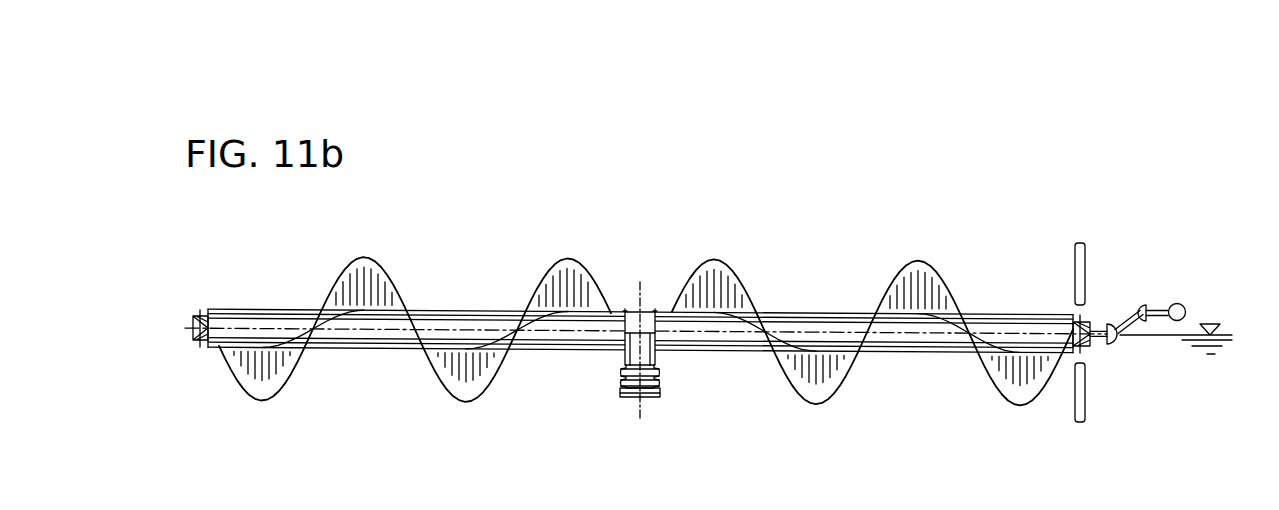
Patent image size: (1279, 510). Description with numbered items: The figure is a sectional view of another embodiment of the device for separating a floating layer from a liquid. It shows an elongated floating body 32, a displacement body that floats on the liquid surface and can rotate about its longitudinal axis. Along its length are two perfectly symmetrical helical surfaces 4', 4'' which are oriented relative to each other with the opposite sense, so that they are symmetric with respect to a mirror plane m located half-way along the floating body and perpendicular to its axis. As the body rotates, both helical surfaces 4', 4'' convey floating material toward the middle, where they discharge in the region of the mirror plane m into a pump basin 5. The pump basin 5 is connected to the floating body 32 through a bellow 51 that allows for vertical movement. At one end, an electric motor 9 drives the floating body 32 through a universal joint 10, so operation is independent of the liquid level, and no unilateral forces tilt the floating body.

The helical surface 4' is at (415, 300).
The floating body 32 is at (450, 322).
The helical surface 4'' is at (872, 302).
The mirror plane m is at (640, 330).
The pump basin 5 is at (621, 393).
The bellow 51 is at (660, 390).
The universal joint 10 is at (1130, 316).
The electric motor 9 is at (1180, 303).